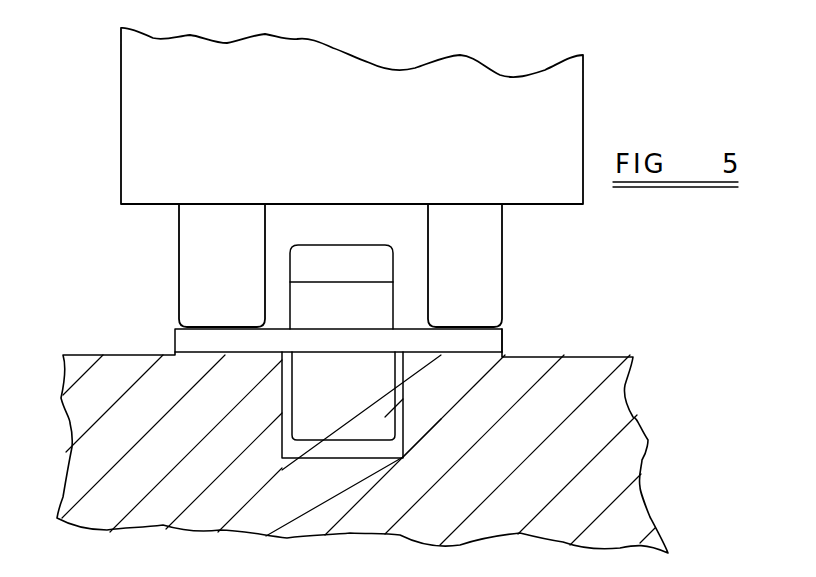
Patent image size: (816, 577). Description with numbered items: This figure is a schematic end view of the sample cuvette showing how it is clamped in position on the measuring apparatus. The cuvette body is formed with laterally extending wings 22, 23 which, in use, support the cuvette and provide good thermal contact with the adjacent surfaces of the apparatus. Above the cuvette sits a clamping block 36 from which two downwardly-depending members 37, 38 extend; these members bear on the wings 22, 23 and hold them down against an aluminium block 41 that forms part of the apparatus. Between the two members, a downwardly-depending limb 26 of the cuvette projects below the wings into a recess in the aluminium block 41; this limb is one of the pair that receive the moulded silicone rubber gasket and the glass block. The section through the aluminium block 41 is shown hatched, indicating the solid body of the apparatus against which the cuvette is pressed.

The clamping block 36 is at (352, 116).
The downwardly-depending member 37 is at (188, 245).
The downwardly-depending member 38 is at (497, 258).
The wing 22 is at (175, 335).
The wing 23 is at (498, 343).
The downwardly-depending limb 26 is at (342, 351).
The aluminium block 41 is at (362, 452).